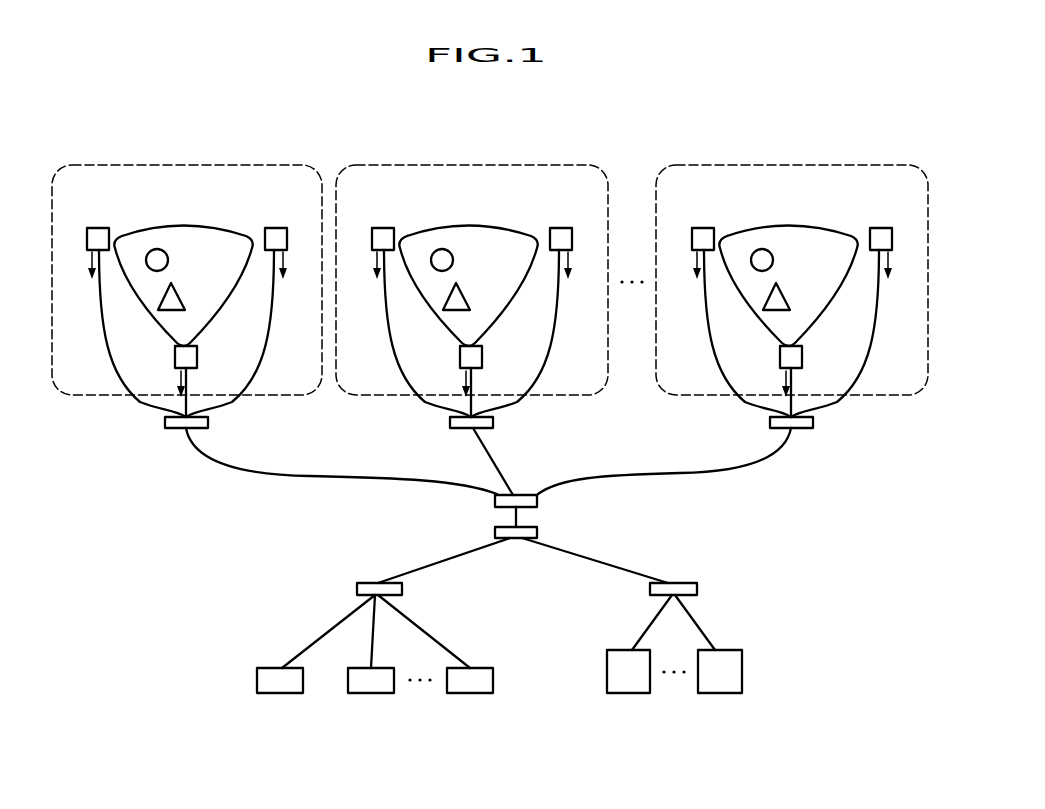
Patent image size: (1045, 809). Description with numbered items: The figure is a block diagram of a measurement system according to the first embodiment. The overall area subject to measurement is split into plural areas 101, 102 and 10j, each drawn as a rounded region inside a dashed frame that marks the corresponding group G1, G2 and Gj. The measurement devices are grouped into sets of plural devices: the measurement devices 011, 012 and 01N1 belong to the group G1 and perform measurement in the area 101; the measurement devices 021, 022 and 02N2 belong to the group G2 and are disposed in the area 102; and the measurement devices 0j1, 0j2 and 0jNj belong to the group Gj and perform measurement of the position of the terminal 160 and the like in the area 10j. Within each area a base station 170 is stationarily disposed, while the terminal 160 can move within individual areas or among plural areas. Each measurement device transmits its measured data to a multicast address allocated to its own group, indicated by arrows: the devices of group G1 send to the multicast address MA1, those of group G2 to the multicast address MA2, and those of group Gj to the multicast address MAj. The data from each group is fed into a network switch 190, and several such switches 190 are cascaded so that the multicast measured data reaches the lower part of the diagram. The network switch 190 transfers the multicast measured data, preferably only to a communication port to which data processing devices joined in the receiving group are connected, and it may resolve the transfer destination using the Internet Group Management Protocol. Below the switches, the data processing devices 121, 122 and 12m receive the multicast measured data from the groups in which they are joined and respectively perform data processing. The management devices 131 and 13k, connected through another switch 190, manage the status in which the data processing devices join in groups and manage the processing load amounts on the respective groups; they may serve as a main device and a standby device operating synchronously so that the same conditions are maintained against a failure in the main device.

The group G1 is at (186, 165).
The group G2 is at (471, 165).
The group Gj is at (791, 165).
The measurement device 011 is at (98, 228).
The measurement device 01N1 is at (277, 228).
The measurement device 012 is at (175, 355).
The area 101 is at (187, 227).
The measurement device 021 is at (383, 228).
The measurement device 02N2 is at (562, 228).
The measurement device 022 is at (460, 355).
The area 102 is at (472, 227).
The measurement device 0j1 is at (703, 228).
The measurement device 0jNj is at (882, 228).
The measurement device 0j2 is at (780, 355).
The area 10j is at (792, 227).
The base station 170 is at (168, 257).
The terminal 160 is at (179, 299).
The multicast address MA1 is at (188, 324).
The multicast address MA2 is at (473, 324).
The multicast address MAj is at (793, 324).
The network switch 190 is at (175, 429).
The data processing device 121 is at (278, 694).
The data processing device 122 is at (369, 694).
The data processing device 12m is at (468, 694).
The management device 131 is at (627, 694).
The management device 13k is at (722, 694).